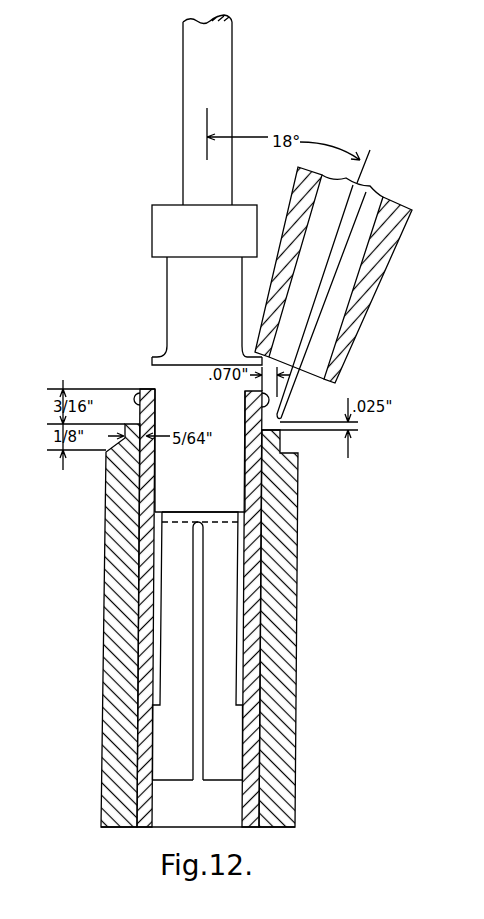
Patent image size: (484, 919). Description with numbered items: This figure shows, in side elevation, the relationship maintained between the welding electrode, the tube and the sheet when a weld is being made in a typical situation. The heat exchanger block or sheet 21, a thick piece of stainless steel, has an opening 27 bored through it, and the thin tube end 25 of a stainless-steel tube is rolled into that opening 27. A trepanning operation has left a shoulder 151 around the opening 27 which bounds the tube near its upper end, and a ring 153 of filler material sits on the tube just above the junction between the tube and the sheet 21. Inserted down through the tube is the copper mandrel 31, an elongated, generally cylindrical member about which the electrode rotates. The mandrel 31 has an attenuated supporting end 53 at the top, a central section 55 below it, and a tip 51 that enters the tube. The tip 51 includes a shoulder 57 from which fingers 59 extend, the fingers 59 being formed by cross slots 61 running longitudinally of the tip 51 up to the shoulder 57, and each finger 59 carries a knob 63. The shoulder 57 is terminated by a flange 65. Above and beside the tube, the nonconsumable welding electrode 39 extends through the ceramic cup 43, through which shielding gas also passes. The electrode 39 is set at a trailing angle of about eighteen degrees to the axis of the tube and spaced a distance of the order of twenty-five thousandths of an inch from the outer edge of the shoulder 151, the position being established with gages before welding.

The attenuated supporting end 53 is at (223, 52).
The mandrel 31 is at (152, 306).
The central section 55 is at (208, 303).
The flange 65 is at (152, 365).
The ring of filler material 153 is at (139, 393).
The shoulder 151 is at (273, 436).
The tube end 25 is at (140, 412).
The opening 27 is at (154, 478).
The shoulder 57 is at (205, 491).
The block or sheet 21 is at (291, 510).
The tip 51 is at (231, 588).
The cross slots 61 is at (200, 578).
The knobs 63 is at (176, 768).
The fingers 59 is at (221, 767).
The ceramic cup 43 is at (402, 227).
The nonconsumable welding electrode 39 is at (312, 302).